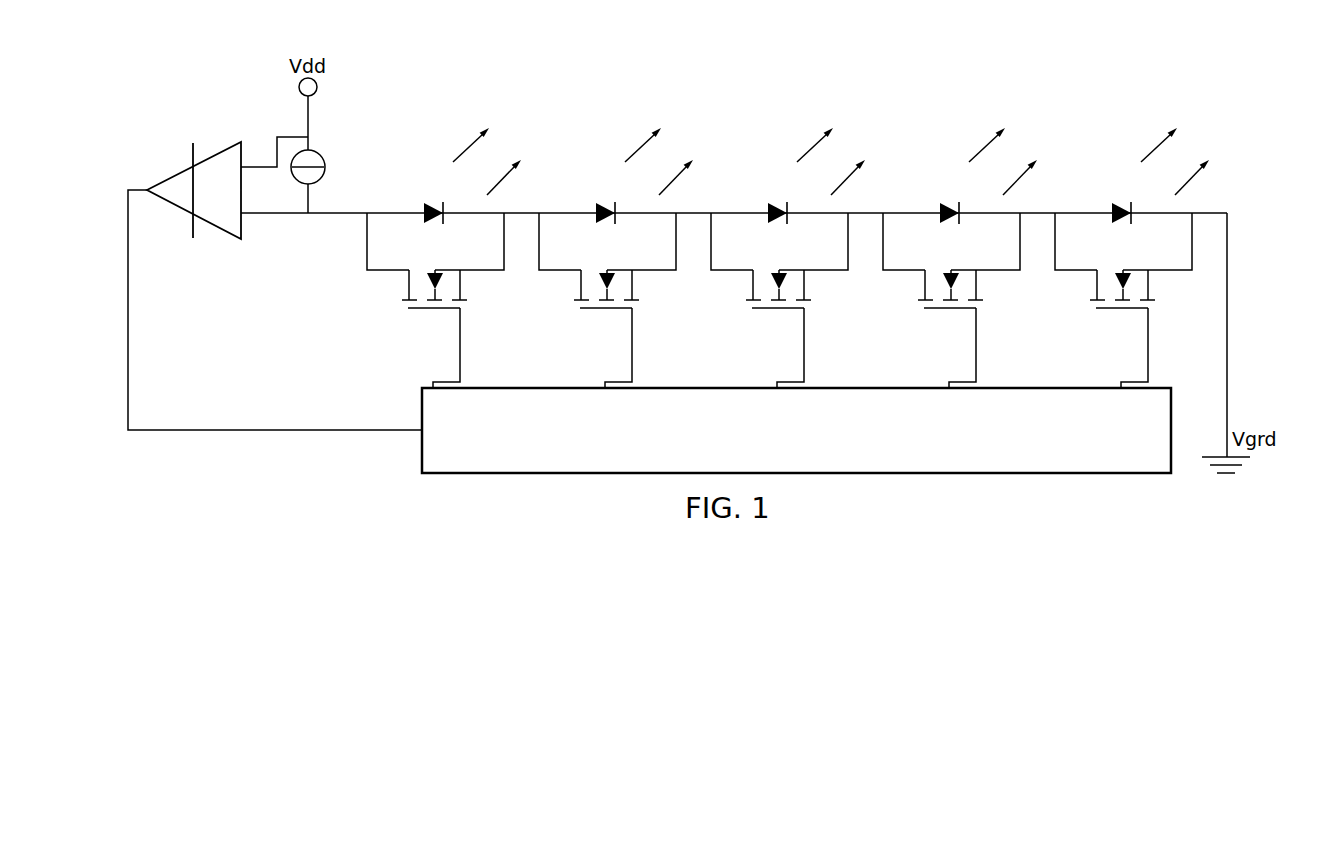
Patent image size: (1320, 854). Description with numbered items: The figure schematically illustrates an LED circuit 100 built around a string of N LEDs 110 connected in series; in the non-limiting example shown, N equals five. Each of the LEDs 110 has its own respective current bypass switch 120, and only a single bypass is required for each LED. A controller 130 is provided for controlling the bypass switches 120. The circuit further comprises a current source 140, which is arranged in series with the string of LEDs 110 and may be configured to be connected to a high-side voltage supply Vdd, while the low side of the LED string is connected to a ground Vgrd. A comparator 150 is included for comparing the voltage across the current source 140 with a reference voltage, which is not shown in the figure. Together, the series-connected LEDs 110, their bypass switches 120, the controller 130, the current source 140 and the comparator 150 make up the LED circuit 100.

The LED circuit 100 is at (831, 65).
The LEDs 110 is at (428, 206).
The current bypass switch 120 is at (426, 283).
The controller 130 is at (817, 440).
The current source 140 is at (323, 157).
The comparator 150 is at (232, 201).